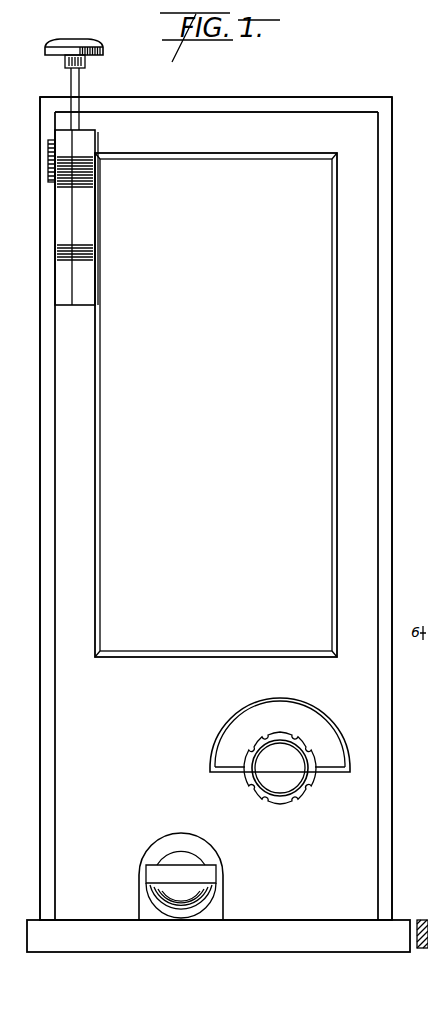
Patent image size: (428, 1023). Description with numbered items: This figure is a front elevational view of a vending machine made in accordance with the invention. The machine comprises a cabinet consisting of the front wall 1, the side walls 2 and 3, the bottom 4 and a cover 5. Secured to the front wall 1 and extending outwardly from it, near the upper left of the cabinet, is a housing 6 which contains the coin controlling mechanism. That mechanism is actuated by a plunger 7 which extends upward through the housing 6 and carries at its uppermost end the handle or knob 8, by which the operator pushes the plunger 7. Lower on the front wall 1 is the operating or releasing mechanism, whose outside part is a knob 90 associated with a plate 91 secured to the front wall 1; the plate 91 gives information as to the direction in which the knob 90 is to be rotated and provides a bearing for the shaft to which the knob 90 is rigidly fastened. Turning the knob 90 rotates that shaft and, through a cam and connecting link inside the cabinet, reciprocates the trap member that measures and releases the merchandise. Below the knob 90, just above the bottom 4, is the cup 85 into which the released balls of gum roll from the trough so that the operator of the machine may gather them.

The front wall 1 is at (360, 561).
The side wall 2 is at (43, 610).
The side wall 3 is at (389, 620).
The bottom 4 is at (108, 941).
The cover 5 is at (206, 104).
The housing 6 is at (99, 144).
The plunger 7 is at (82, 85).
The handle or knob 8 is at (78, 40).
The cup 85 is at (160, 893).
The knob 90 is at (316, 780).
The plate 91 is at (280, 726).